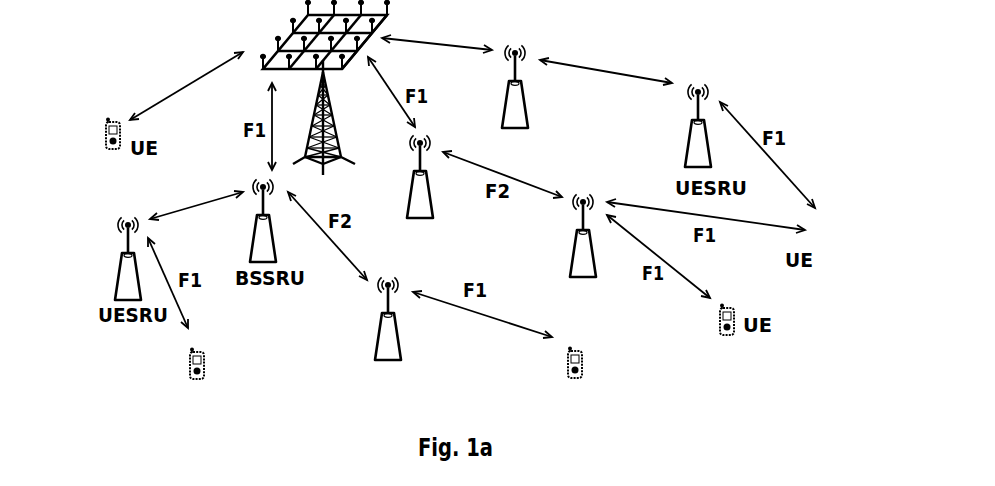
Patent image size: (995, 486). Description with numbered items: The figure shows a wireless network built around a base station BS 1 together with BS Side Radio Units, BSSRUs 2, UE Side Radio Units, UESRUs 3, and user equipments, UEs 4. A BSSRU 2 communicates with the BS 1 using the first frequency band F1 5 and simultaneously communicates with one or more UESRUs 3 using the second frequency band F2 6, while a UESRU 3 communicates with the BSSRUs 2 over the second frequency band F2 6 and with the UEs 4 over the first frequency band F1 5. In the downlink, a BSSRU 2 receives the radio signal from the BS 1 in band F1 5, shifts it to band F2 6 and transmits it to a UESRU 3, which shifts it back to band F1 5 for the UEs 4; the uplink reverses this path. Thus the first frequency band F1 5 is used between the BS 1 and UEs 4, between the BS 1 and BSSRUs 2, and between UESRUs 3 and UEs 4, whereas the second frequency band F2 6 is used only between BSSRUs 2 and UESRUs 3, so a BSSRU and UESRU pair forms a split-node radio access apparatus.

The BS 1 is at (355, 131).
The BSSRU 2 is at (537, 106).
The UESRU 3 is at (558, 255).
The UE 4 is at (215, 363).
The first frequency band F1 5 is at (155, 77).
The second frequency band F2 6 is at (172, 195).